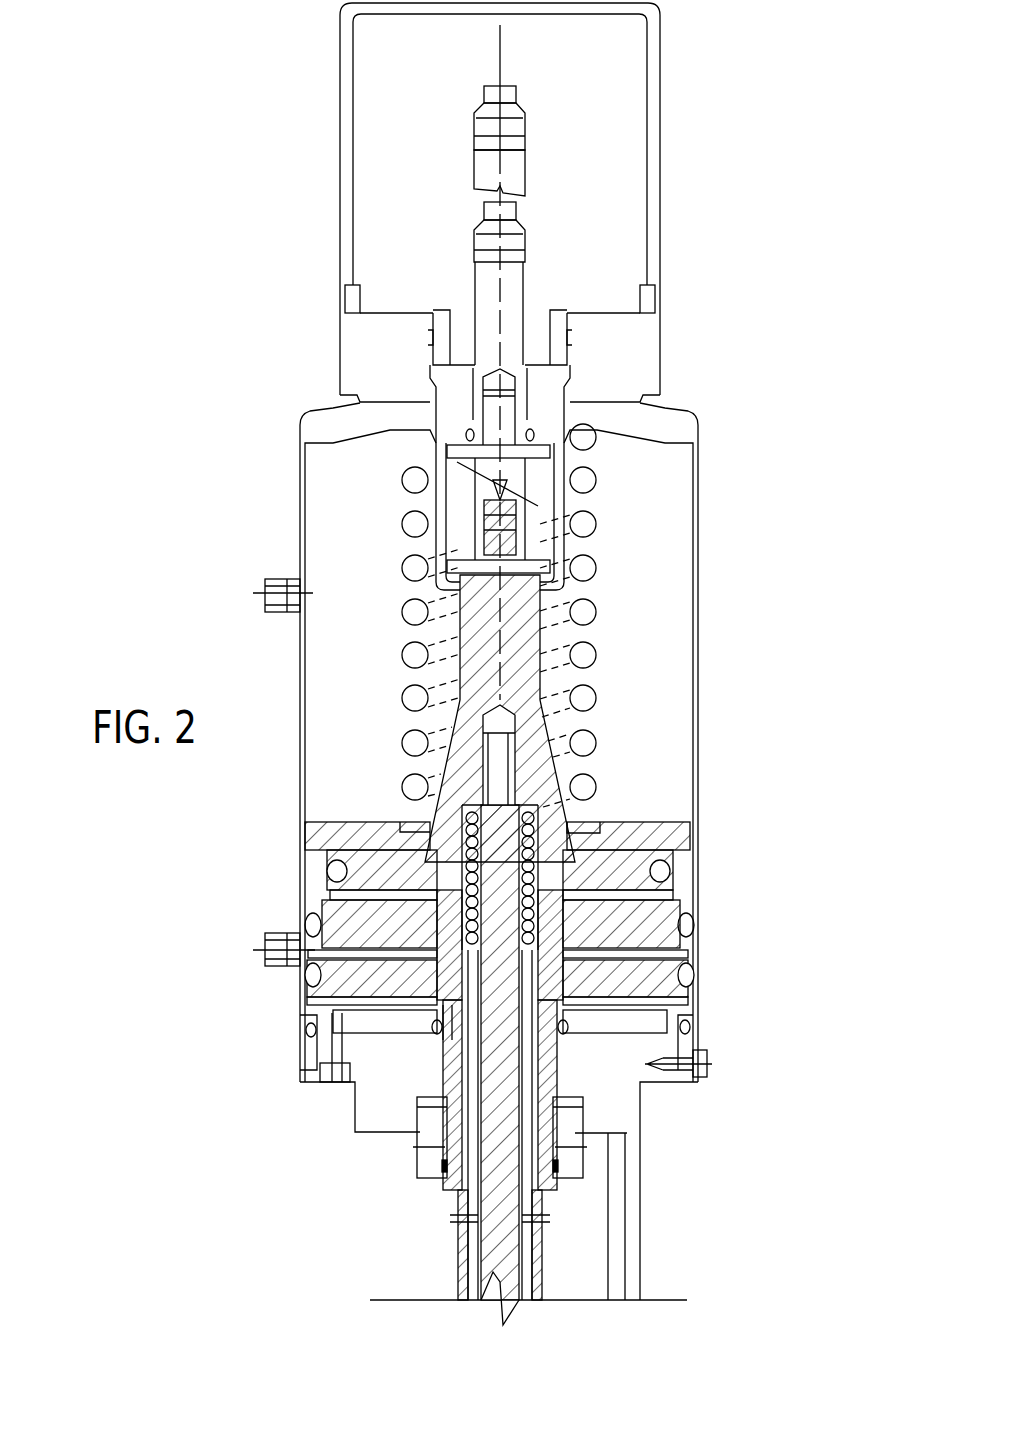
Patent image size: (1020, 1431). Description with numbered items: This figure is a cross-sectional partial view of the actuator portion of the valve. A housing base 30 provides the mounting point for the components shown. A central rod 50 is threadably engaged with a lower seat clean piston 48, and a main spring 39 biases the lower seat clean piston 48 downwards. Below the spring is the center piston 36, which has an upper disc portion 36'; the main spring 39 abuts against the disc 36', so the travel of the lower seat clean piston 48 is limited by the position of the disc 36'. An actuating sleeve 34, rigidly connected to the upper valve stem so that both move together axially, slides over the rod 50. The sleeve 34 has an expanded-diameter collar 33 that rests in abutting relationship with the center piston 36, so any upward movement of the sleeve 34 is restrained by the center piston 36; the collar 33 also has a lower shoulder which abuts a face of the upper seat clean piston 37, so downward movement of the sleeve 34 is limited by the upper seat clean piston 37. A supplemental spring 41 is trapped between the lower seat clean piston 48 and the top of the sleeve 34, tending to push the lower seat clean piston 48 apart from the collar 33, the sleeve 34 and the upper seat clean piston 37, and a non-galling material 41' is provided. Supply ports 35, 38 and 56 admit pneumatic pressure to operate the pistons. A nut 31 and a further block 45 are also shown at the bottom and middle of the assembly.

The housing base 30 is at (620, 1108).
The nut 31 is at (433, 1168).
The adjusting collar 33 is at (600, 965).
The actuating sleeve 34 is at (537, 1245).
The supply port 35 is at (333, 1083).
The center piston 36 is at (557, 882).
The upper disc portion 36' is at (407, 762).
The upper seat clean piston 37 is at (440, 992).
The supply port 38 is at (265, 945).
The main spring 39 is at (583, 612).
The supplemental spring 41 is at (387, 878).
The non-galling material 41' is at (345, 1030).
The middle block 45 is at (624, 903).
The lower seat clean piston 48 is at (650, 825).
The rod 50 is at (482, 1243).
The supply port 56 is at (266, 588).